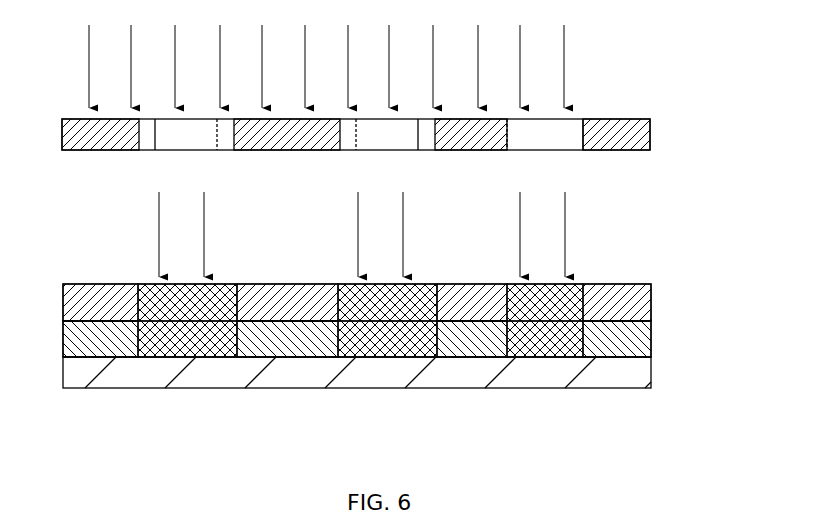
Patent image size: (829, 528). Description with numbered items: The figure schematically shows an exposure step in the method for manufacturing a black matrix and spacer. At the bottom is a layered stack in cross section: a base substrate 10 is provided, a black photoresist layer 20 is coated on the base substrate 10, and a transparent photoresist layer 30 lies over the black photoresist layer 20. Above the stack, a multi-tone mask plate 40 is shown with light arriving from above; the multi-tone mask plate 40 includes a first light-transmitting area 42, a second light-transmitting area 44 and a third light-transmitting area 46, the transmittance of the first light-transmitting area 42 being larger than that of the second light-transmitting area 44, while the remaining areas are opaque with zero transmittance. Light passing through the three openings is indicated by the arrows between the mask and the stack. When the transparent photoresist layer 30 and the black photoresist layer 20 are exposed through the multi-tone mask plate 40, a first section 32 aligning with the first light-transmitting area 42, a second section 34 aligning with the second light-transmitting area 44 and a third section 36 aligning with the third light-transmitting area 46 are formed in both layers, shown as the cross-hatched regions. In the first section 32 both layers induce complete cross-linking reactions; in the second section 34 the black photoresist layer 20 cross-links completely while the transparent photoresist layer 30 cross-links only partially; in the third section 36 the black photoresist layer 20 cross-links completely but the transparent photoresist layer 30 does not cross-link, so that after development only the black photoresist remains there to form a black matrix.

The base substrate 10 is at (638, 375).
The black photoresist layer 20 is at (651, 323).
The transparent photoresist layer 30 is at (650, 285).
The first section 32 is at (178, 338).
The second section 34 is at (398, 345).
The third section 36 is at (550, 345).
The multi-tone mask plate 40 is at (652, 127).
The first light-transmitting area 42 is at (187, 137).
The second light-transmitting area 44 is at (387, 137).
The third light-transmitting area 46 is at (563, 137).